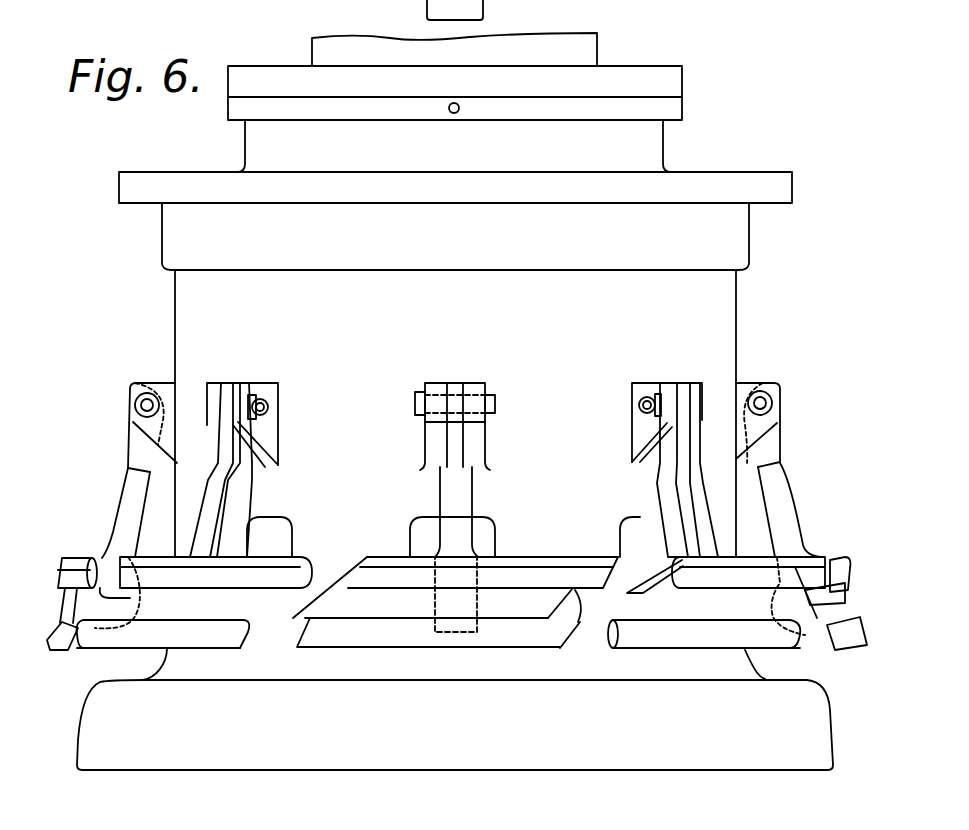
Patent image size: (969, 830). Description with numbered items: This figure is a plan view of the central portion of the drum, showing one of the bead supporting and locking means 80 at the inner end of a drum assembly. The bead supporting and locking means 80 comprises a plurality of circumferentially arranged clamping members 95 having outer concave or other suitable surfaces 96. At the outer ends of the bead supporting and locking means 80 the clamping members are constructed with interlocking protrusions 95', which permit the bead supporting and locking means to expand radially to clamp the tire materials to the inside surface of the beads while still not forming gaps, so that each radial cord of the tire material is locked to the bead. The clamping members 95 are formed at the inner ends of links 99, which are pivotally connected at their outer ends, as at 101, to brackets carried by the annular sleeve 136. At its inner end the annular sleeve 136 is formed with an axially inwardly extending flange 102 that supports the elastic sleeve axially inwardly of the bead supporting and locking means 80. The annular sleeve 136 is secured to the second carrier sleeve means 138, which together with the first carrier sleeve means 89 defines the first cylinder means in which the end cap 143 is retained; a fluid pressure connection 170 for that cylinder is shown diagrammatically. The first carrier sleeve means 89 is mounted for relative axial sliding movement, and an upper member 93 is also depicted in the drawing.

The bead supporting and locking means 80 is at (75, 533).
The first carrier sleeve means 89 is at (585, 48).
The upper member 93 is at (423, 10).
The clamping members 95 is at (472, 566).
The interlocking protrusions 95' is at (455, 616).
The outer concave surfaces 96 is at (305, 617).
The links 99 is at (138, 488).
The pivotal connection 101 is at (258, 400).
The axially inwardly extending flanges 102 is at (815, 750).
The annular sleeve 136 is at (715, 315).
The second carrier sleeve means 138 is at (669, 140).
The end cap 143 is at (670, 77).
The fluid pressure connection 170 is at (457, 113).